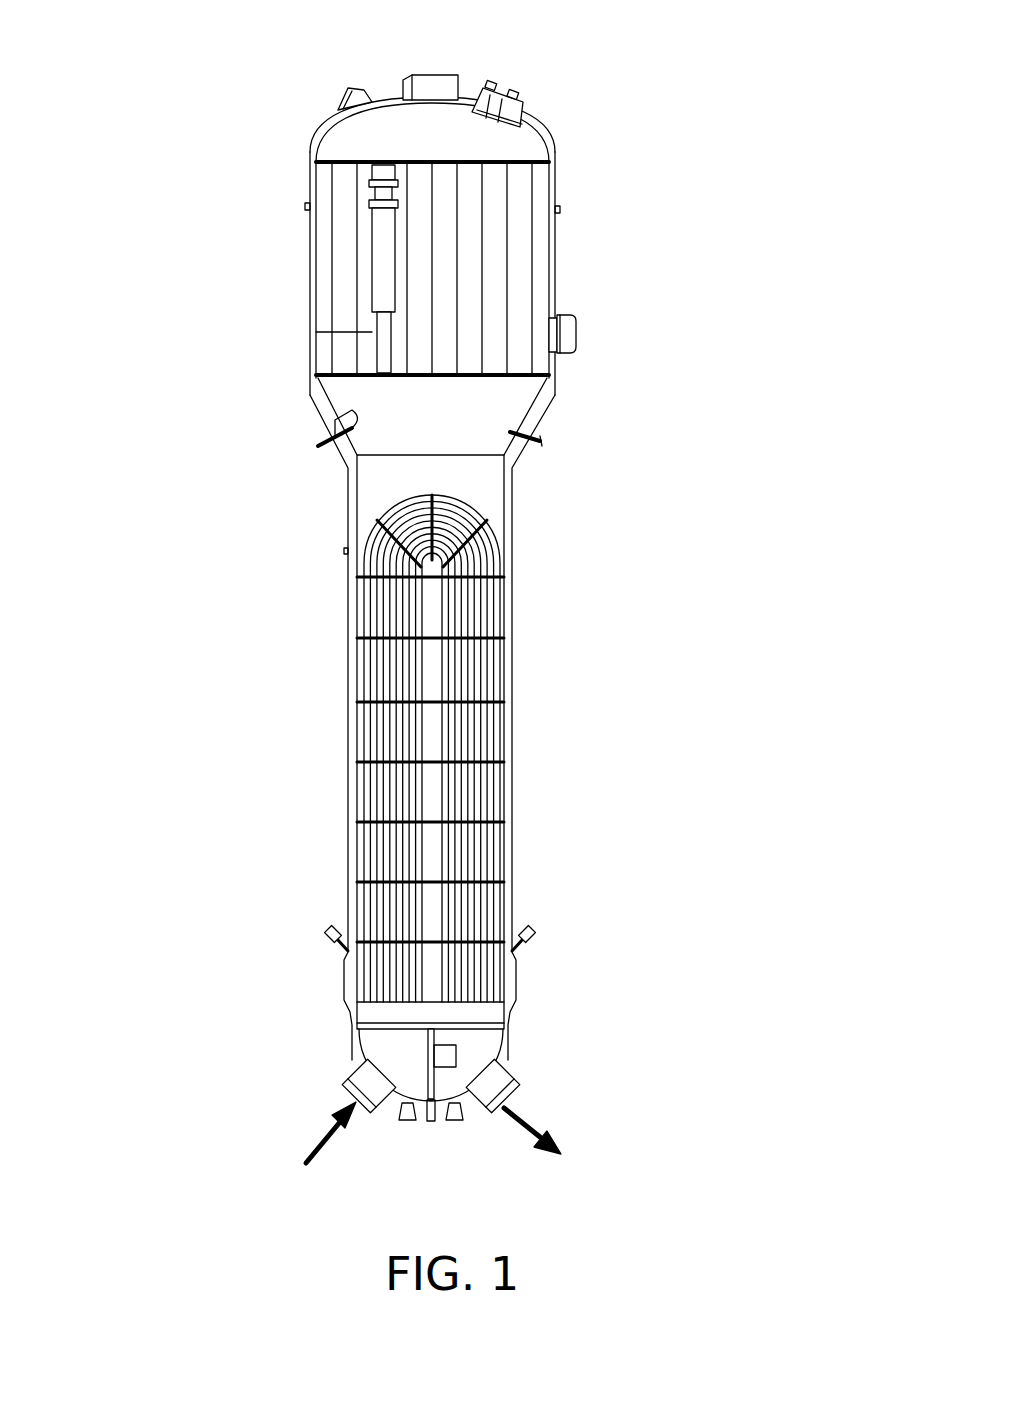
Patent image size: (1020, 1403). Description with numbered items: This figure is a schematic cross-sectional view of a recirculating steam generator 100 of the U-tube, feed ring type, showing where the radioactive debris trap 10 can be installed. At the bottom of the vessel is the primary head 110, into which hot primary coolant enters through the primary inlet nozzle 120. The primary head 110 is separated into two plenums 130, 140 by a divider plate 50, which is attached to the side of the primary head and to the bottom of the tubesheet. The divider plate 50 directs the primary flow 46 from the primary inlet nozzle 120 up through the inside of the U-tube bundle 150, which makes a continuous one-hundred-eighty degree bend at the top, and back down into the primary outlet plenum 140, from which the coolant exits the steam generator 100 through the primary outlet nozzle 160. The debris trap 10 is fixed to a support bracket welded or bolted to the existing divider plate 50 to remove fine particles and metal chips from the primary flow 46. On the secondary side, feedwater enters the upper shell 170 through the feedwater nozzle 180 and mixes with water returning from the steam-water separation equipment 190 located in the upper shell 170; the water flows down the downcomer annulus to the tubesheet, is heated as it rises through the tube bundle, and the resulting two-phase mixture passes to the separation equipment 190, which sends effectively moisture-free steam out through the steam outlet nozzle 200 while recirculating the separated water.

The steam generator 100 is at (270, 206).
The steam outlet nozzle 200 is at (455, 74).
The upper shell 170 is at (518, 228).
The steam-water separation equipment 190 is at (380, 273).
The primary head 110 is at (568, 312).
The feedwater nozzle 180 is at (574, 333).
The U-tube bundle 150 is at (488, 668).
The radioactive debris trap 10 is at (494, 1040).
The plenum 130 is at (397, 1043).
The primary outlet plenum 140 is at (473, 1055).
The divider plate 50 is at (398, 1103).
The primary flow 46 is at (312, 1143).
The primary inlet nozzle 120 is at (363, 1122).
The primary outlet nozzle 160 is at (502, 1098).